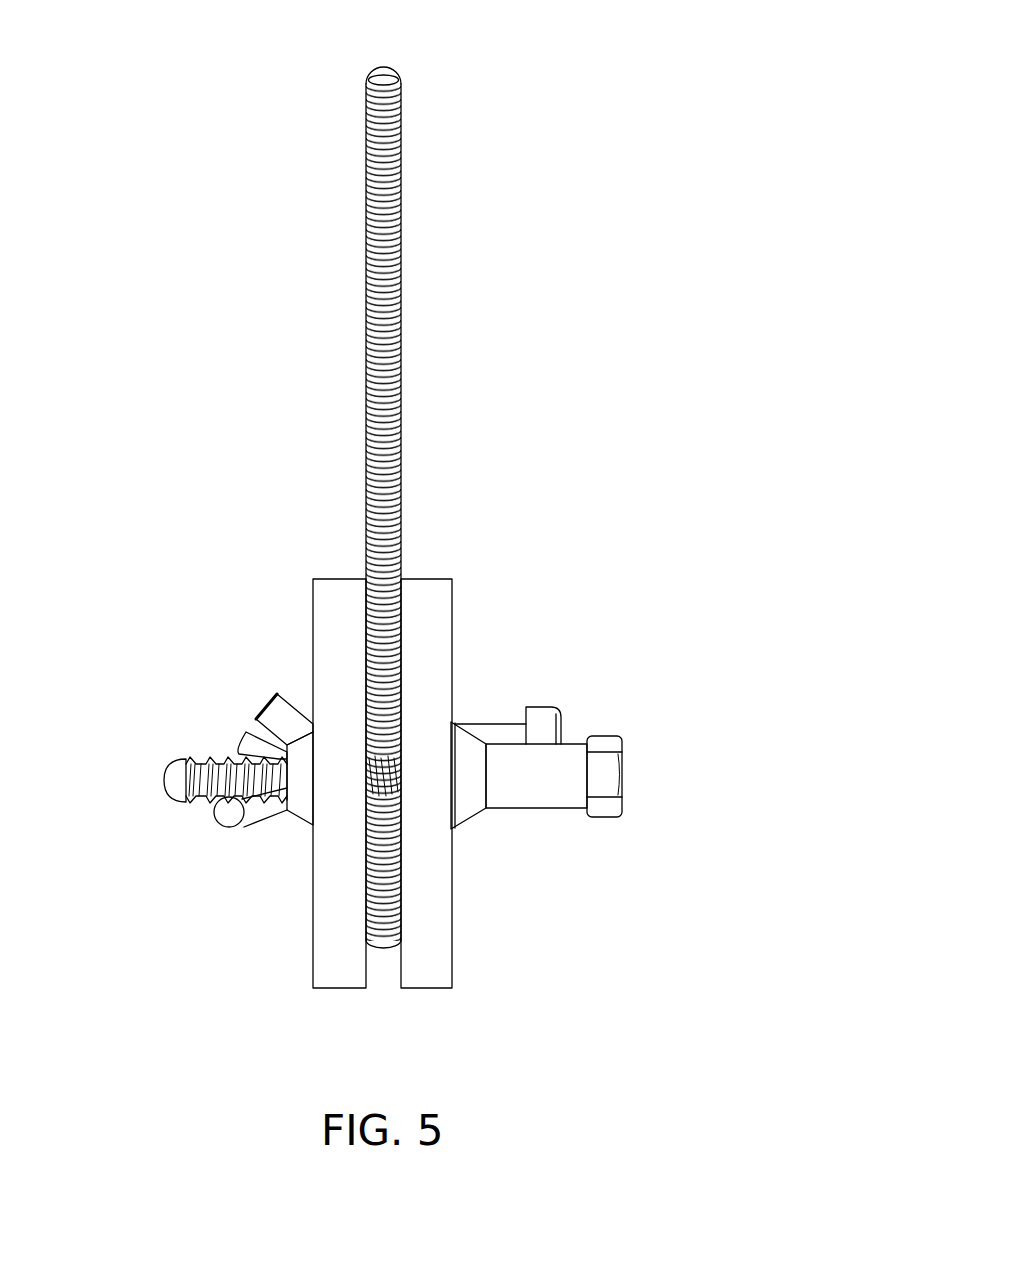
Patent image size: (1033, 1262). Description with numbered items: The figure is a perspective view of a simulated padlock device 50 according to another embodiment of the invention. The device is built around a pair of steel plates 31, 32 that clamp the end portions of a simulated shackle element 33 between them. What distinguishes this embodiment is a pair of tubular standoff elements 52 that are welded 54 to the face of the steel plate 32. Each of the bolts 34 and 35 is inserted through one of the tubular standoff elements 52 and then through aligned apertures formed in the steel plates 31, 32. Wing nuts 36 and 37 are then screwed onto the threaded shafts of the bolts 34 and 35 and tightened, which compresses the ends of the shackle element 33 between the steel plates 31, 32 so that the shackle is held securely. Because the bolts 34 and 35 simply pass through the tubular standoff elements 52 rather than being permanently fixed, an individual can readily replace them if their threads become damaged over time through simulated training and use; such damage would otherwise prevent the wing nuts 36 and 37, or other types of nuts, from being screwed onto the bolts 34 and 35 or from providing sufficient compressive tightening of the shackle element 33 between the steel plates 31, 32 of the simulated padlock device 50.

The simulated padlock device 50 is at (611, 89).
The simulated shackle element 33 is at (402, 243).
The steel plate 31 is at (342, 610).
The steel plate 32 is at (423, 628).
The wing nut 36 is at (232, 830).
The wing nut 37 is at (258, 713).
The weld 54 is at (475, 817).
The tubular standoff element 52 is at (493, 722).
The bolt 35 is at (542, 722).
The bolt 34 is at (625, 770).